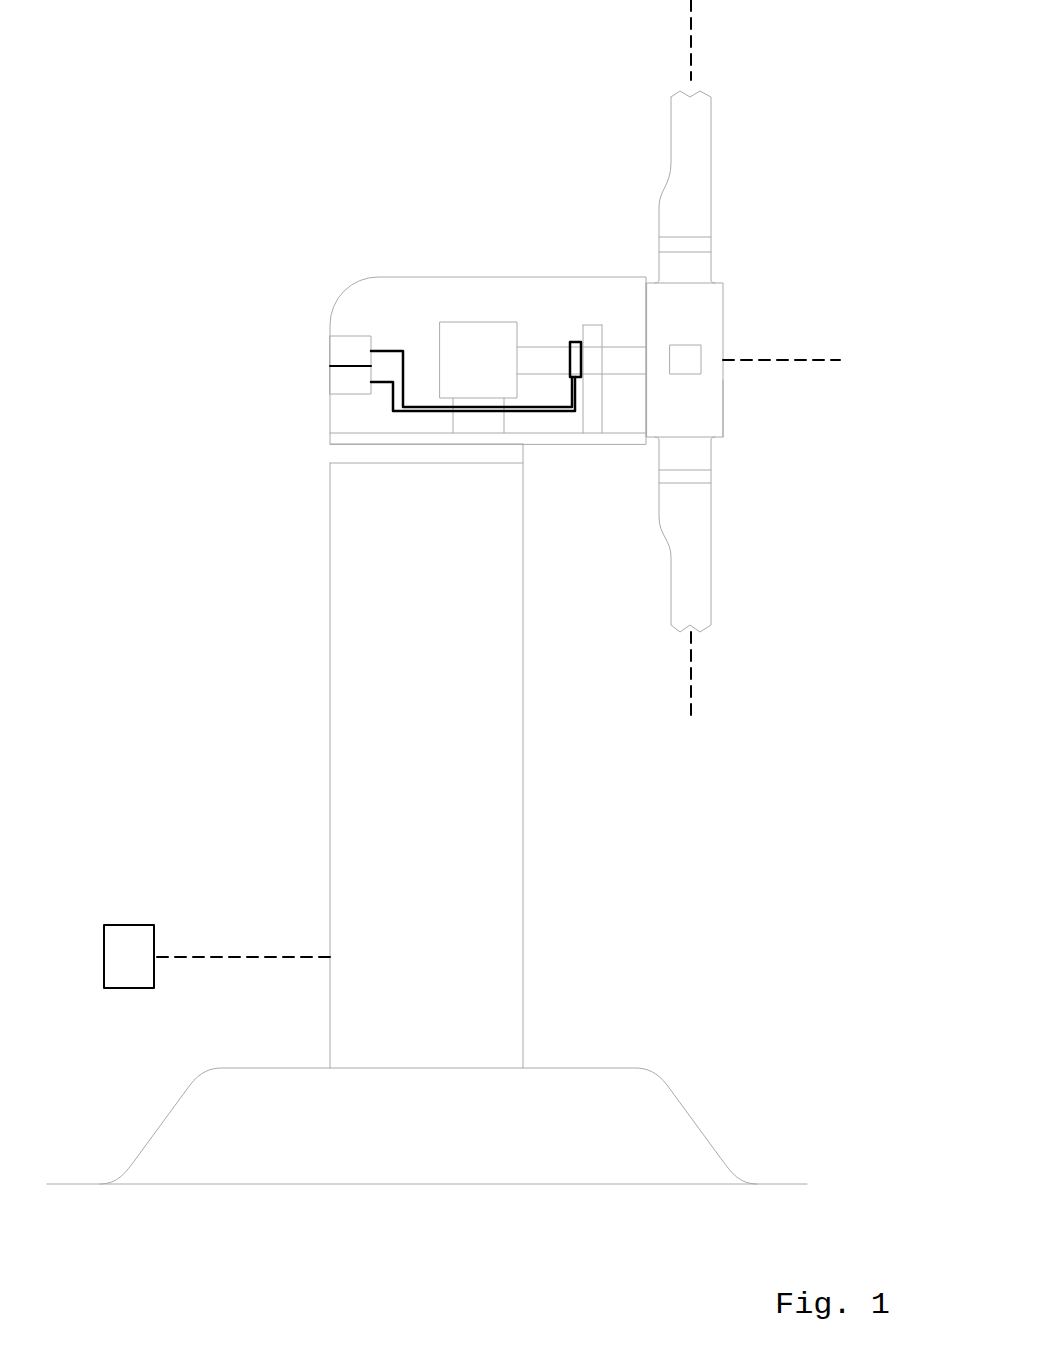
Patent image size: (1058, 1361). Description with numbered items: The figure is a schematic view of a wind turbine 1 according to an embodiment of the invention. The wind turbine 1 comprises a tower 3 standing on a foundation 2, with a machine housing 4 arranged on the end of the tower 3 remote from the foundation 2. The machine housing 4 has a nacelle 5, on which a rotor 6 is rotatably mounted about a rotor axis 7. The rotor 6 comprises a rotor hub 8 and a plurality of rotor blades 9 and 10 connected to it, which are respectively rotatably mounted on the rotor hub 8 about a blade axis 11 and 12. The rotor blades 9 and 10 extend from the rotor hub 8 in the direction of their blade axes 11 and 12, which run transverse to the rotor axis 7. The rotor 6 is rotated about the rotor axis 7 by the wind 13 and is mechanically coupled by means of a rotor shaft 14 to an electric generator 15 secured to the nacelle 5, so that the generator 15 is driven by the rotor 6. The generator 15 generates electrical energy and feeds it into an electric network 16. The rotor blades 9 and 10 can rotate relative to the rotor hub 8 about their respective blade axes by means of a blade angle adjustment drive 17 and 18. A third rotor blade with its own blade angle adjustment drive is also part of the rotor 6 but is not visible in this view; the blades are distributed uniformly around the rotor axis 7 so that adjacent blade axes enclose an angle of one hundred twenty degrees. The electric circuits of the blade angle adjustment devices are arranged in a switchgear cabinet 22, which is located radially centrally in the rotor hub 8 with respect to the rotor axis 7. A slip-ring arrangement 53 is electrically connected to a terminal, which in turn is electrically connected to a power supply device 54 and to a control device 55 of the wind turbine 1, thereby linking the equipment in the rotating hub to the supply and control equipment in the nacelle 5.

The wind turbine 1 is at (244, 104).
The foundation 2 is at (177, 1121).
The tower 3 is at (343, 737).
The machine housing 4 is at (347, 290).
The nacelle 5 is at (338, 440).
The rotor 6 is at (734, 311).
The rotor axis 7 is at (812, 360).
The rotor hub 8 is at (717, 422).
The rotor blade 9 is at (678, 150).
The rotor blade 10 is at (678, 577).
The blade axis 11 is at (700, 30).
The blade axis 12 is at (697, 670).
The wind 13 is at (845, 203).
The rotor shaft 14 is at (622, 365).
The electric generator 15 is at (488, 328).
The electric network 16 is at (128, 932).
The blade angle adjustment drive 17 is at (702, 244).
The blade angle adjustment drive 18 is at (701, 477).
The switchgear cabinet 22 is at (692, 364).
The slip-ring arrangement 53 is at (572, 340).
The power supply device 54 is at (336, 345).
The control device 55 is at (336, 385).